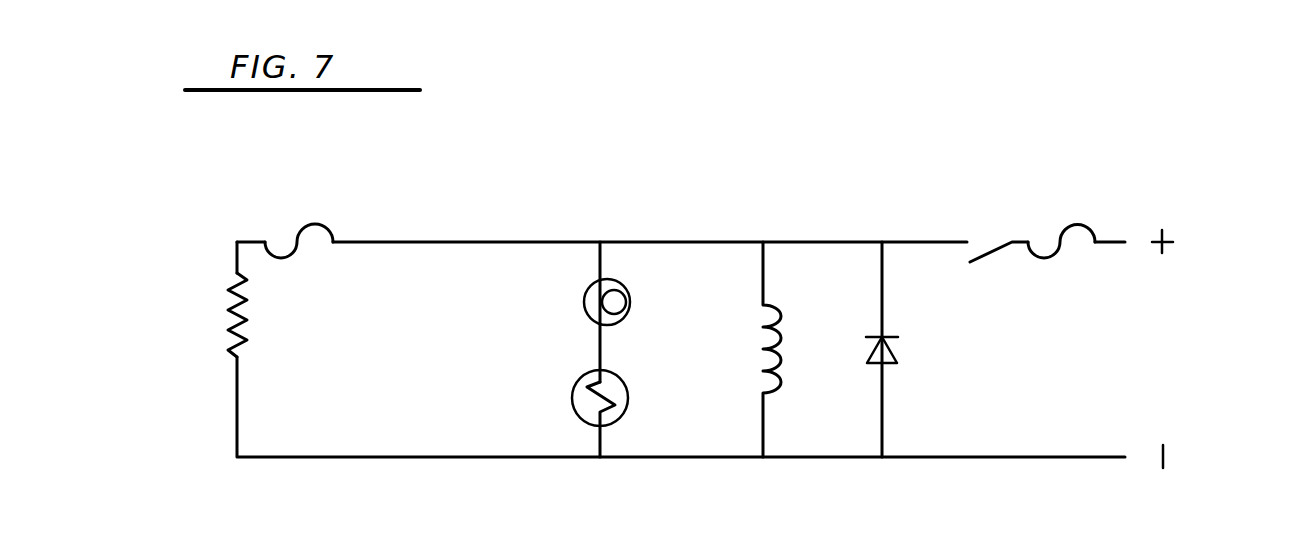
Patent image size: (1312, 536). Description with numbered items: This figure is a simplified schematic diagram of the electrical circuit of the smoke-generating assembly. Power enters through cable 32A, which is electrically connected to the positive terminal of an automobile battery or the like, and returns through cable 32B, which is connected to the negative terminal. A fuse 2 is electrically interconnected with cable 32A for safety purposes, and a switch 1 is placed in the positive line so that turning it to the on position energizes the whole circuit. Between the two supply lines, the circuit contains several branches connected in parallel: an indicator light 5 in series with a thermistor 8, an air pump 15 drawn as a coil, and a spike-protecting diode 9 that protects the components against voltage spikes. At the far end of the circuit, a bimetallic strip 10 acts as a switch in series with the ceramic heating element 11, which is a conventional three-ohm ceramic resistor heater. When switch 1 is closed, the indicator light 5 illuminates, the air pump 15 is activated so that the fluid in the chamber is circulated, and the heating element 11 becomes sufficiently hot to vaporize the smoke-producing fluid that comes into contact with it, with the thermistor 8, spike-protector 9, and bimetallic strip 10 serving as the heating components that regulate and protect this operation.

The switch 1 is at (980, 248).
The fuse 2 is at (1047, 262).
The indicator light 5 is at (585, 298).
The thermistor 8 is at (573, 408).
The spike-protecting diode 9 is at (888, 366).
The bimetallic strip 10 is at (328, 228).
The ceramic heating element 11 is at (228, 318).
The air pump 15 is at (780, 306).
The cable 32A is at (1180, 241).
The cable 32B is at (1168, 454).